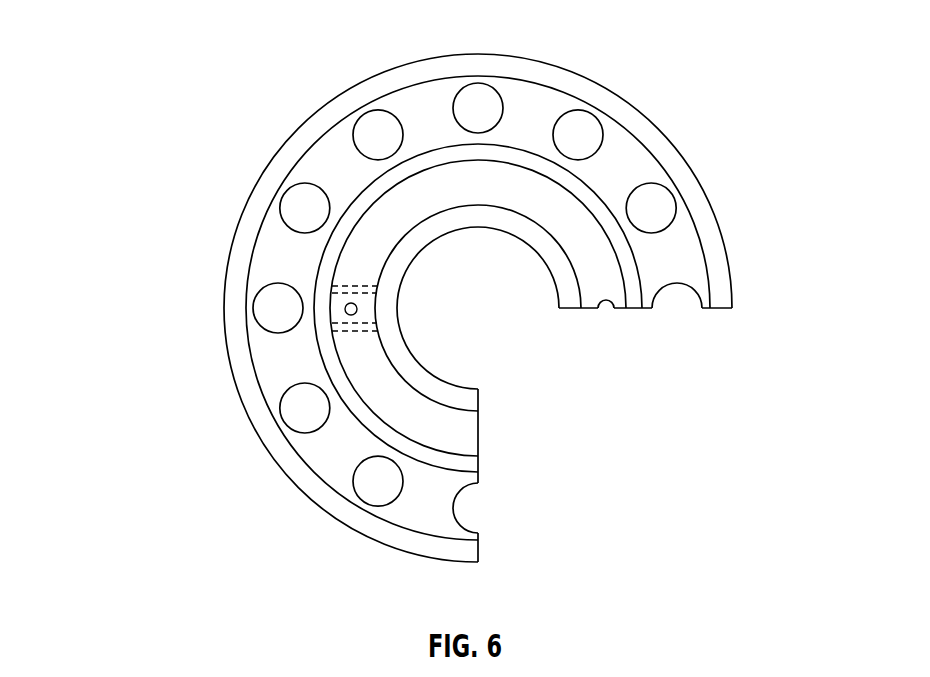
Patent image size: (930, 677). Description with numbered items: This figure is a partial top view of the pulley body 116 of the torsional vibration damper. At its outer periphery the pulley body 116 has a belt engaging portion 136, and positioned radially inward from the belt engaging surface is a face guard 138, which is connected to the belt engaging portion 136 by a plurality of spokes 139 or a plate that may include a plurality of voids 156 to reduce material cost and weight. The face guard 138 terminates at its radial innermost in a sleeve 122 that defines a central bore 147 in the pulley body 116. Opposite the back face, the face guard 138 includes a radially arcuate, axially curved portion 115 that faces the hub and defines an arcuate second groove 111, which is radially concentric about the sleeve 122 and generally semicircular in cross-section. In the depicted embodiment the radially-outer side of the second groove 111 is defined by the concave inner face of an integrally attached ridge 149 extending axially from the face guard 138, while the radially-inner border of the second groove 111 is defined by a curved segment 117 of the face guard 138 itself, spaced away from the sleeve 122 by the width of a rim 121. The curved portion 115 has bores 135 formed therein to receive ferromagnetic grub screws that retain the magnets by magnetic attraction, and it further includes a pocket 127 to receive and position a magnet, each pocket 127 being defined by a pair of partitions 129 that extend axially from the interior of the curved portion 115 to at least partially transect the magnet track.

The pulley body 116 is at (698, 59).
The second groove 111 is at (510, 173).
The radially arcuate, axially curved portion 115 is at (390, 210).
The curved segment 117 is at (533, 208).
The rim 121 is at (396, 300).
The sleeve 122 is at (560, 291).
The pocket 127 is at (340, 306).
The partitions 129 is at (335, 283).
The bores 135 is at (347, 313).
The belt engaging portion 136 is at (252, 430).
The face guard 138 is at (332, 453).
The spokes 139 is at (437, 517).
The central bore 147 is at (485, 335).
The ridge 149 is at (635, 297).
The voids 156 is at (366, 502).